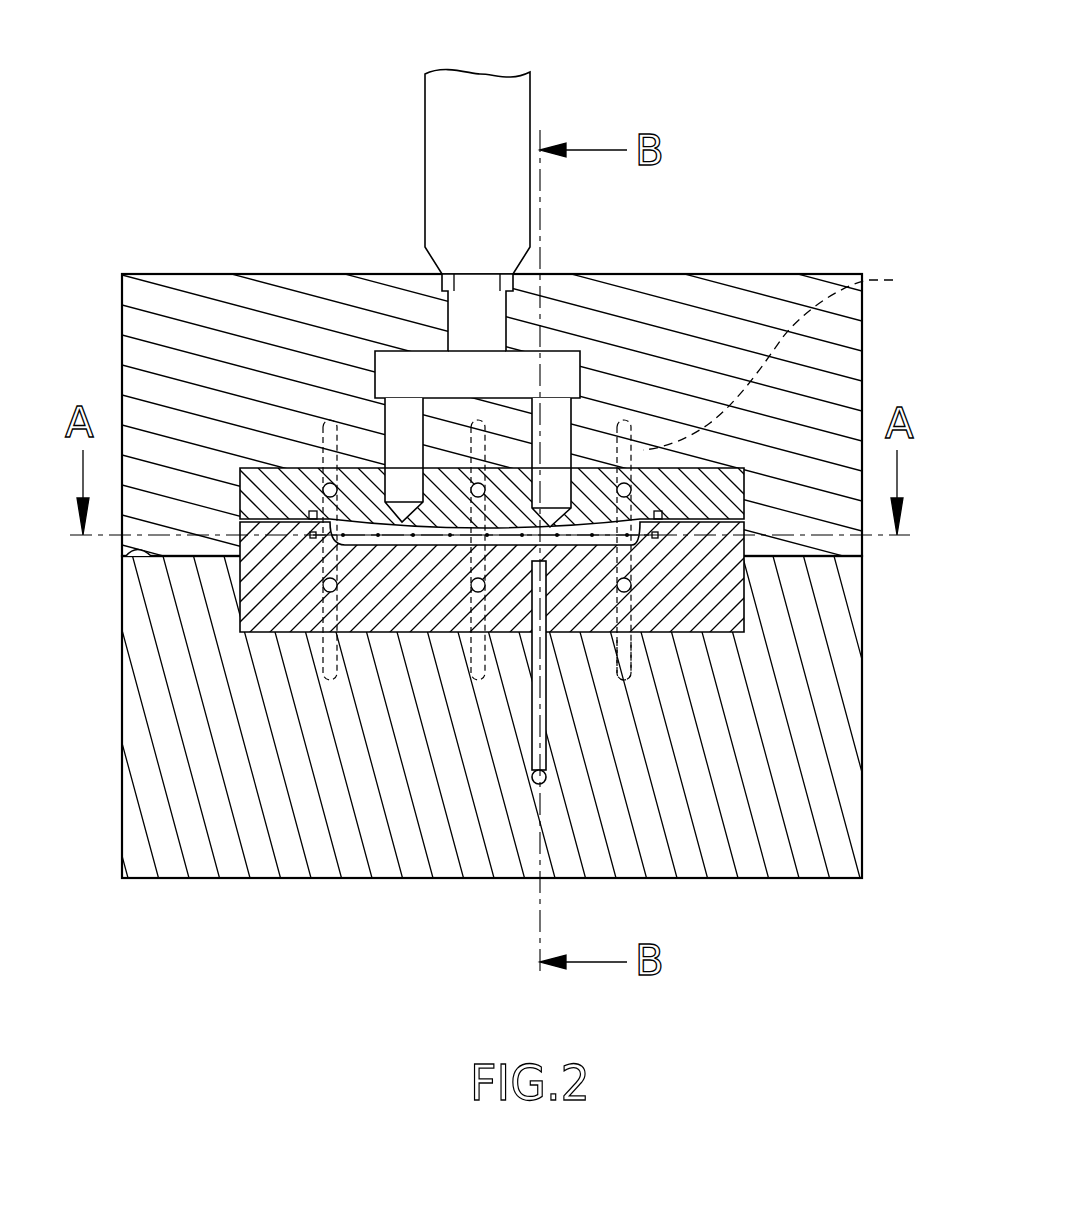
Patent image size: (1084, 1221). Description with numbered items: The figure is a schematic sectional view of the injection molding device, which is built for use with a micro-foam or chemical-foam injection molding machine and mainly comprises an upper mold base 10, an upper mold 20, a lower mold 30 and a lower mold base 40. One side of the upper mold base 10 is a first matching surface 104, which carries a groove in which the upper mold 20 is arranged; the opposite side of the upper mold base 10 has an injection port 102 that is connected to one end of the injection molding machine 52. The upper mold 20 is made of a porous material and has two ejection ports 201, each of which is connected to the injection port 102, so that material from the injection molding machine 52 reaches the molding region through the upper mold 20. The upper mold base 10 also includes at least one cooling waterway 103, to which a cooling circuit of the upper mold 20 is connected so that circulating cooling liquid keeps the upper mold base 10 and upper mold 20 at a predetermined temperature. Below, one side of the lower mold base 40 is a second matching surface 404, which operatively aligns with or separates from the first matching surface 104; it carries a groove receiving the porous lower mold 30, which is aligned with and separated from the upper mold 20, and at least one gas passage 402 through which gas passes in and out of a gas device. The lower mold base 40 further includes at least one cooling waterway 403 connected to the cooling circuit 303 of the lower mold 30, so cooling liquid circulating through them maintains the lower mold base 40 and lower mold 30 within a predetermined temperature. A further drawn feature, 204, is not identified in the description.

The upper mold base 10 is at (291, 300).
The upper mold 20 is at (272, 480).
The lower mold 30 is at (393, 620).
The lower mold base 40 is at (195, 856).
The injection molding machine 52 is at (425, 93).
The injection port 102 is at (462, 290).
The cooling waterway 103 is at (796, 352).
The first matching surface 104 is at (127, 547).
The ejection port 201 is at (552, 527).
The upper guide hole 204 is at (633, 488).
The cooling circuit 303 is at (633, 584).
The gas passage 402 is at (543, 737).
The cooling waterway 403 is at (640, 663).
The second matching surface 404 is at (167, 557).